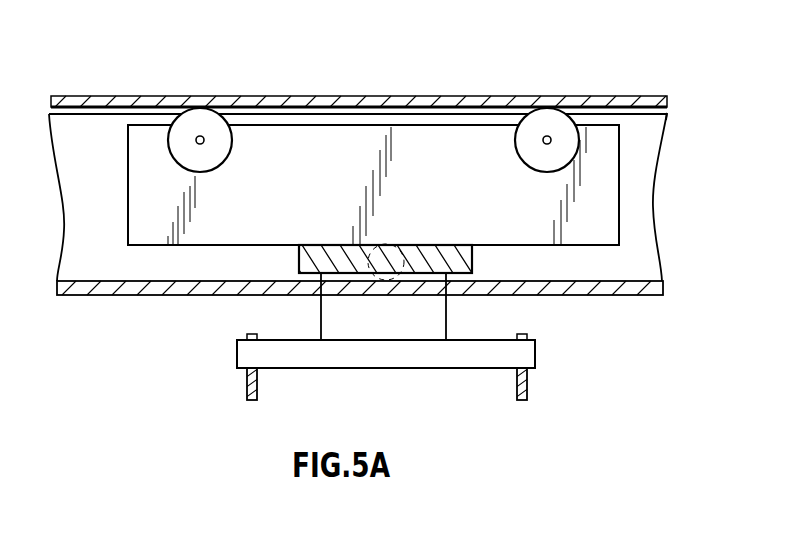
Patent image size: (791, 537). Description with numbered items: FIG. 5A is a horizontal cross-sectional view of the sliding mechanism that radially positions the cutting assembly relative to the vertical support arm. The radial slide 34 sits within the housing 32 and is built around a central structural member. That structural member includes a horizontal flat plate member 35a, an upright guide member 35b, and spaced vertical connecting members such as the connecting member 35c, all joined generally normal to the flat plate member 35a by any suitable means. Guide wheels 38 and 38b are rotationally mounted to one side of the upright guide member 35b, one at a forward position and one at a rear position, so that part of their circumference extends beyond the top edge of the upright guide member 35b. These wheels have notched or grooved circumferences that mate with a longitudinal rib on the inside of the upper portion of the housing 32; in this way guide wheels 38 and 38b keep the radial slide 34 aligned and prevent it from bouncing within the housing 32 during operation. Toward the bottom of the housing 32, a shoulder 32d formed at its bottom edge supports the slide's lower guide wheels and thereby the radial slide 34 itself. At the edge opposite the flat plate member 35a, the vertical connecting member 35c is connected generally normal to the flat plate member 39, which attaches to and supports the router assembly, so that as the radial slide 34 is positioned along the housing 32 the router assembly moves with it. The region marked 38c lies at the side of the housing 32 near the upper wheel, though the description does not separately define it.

The housing 32 is at (624, 97).
The shoulder 32d is at (640, 290).
The radial slide 34 is at (161, 303).
The horizontal flat plate member 35a is at (418, 245).
The upright guide member 35b is at (306, 201).
The vertical connecting member 35c is at (430, 323).
The guide wheel 38 is at (192, 123).
The guide wheel 38b is at (543, 120).
The side rail of housing 38c is at (668, 114).
The flat plate member 39 is at (406, 355).